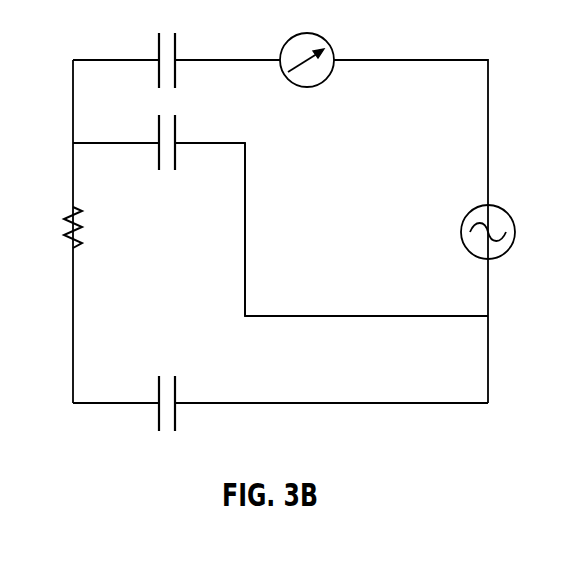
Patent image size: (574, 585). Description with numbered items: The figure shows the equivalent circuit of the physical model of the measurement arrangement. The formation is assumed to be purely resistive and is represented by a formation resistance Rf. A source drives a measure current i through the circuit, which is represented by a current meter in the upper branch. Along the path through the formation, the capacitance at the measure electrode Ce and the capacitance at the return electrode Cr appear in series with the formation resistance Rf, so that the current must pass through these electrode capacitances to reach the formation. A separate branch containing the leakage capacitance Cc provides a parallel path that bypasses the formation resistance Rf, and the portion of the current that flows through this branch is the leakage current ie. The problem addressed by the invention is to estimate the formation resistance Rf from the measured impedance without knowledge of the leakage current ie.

The leakage capacitance Cc is at (150, 50).
The capacitance at the measure electrode Ce is at (150, 133).
The capacitance at the return electrode Cr is at (151, 394).
The formation resistance Rf is at (55, 224).
The measure current i is at (341, 59).
The leakage current ie is at (266, 229).